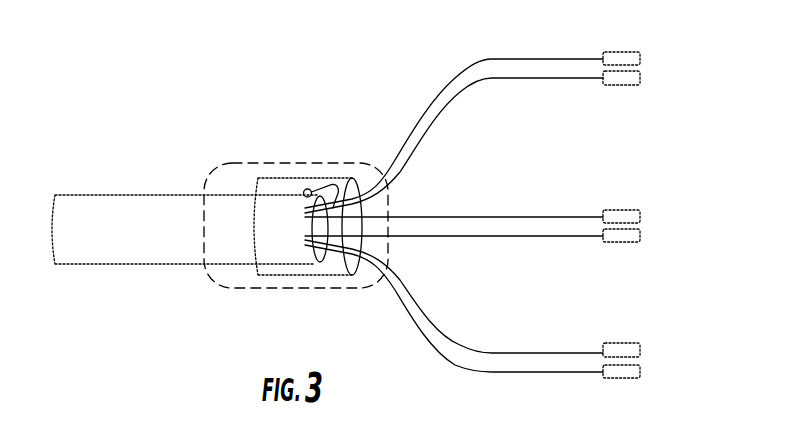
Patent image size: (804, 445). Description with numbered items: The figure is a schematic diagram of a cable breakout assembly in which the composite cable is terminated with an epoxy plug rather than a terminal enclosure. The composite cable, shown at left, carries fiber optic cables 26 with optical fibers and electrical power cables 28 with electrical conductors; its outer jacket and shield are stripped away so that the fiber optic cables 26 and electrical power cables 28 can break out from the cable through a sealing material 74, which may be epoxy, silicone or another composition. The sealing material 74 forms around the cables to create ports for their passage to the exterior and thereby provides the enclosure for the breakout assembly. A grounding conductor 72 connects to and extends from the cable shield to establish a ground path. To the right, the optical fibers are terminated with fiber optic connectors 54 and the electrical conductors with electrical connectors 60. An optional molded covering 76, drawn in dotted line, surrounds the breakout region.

The fiber optic cable 26 is at (540, 57).
The electrical power cable 28 is at (537, 80).
The fiber optic connector 54 is at (610, 52).
The electrical connector 60 is at (622, 86).
The grounding conductor 72 is at (322, 183).
The sealing material 74 is at (297, 178).
The molded covering 76 is at (233, 163).